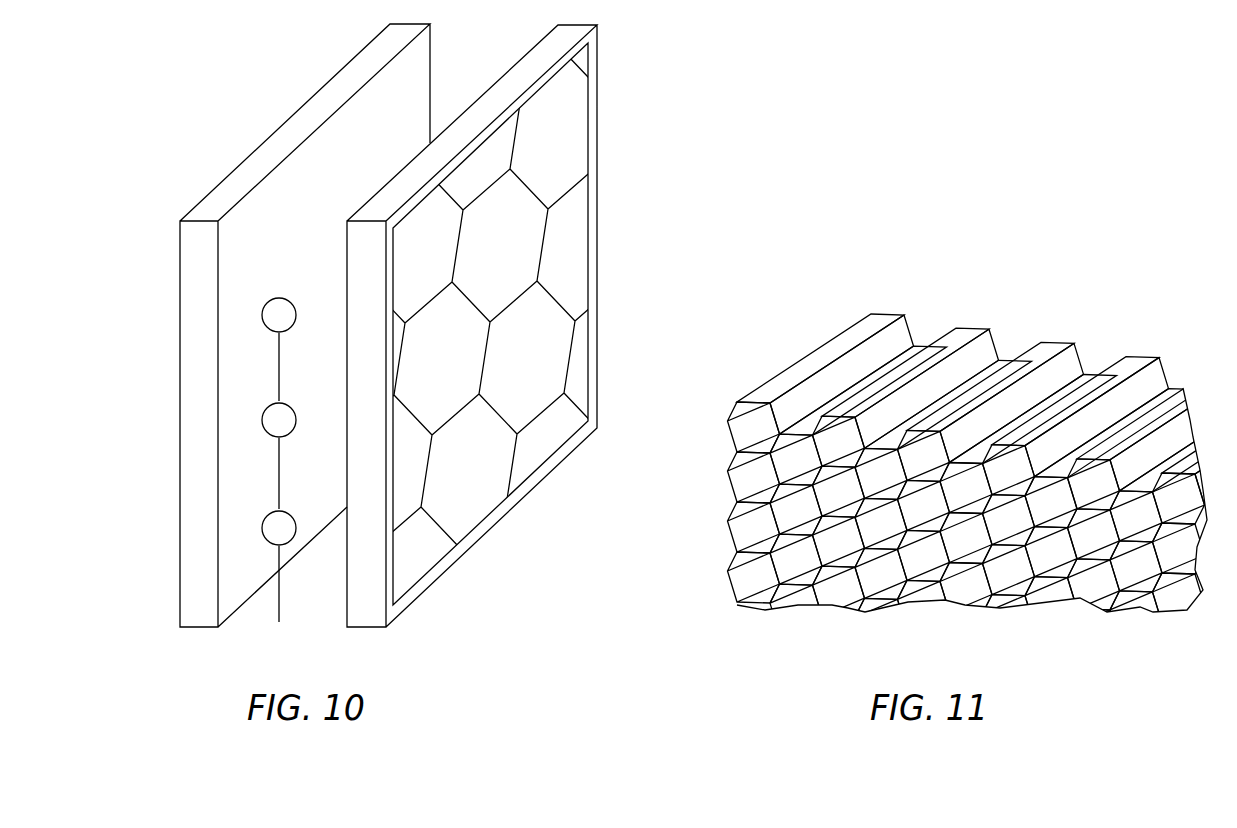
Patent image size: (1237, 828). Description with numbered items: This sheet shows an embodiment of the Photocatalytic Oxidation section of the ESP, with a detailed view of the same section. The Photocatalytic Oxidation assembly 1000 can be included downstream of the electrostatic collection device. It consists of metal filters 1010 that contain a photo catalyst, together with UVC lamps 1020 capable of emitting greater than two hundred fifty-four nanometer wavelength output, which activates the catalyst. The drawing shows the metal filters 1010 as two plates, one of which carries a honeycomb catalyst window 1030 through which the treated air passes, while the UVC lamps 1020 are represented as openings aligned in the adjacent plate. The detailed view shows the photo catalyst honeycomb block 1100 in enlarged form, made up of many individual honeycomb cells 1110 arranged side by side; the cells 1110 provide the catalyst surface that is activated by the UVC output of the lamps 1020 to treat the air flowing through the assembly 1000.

In FIG. 10, the plate assembly 1000 is at (360, 365).
In FIG. 10, the plate 1010 is at (196, 283).
In FIG. 10, the UVC lamps 1020 is at (262, 530).
In FIG. 10, the honeycomb window 1030 is at (474, 483).
In FIG. 11, the honeycomb block 1100 is at (983, 444).
In FIG. 11, the honeycomb cell 1110 is at (1053, 490).